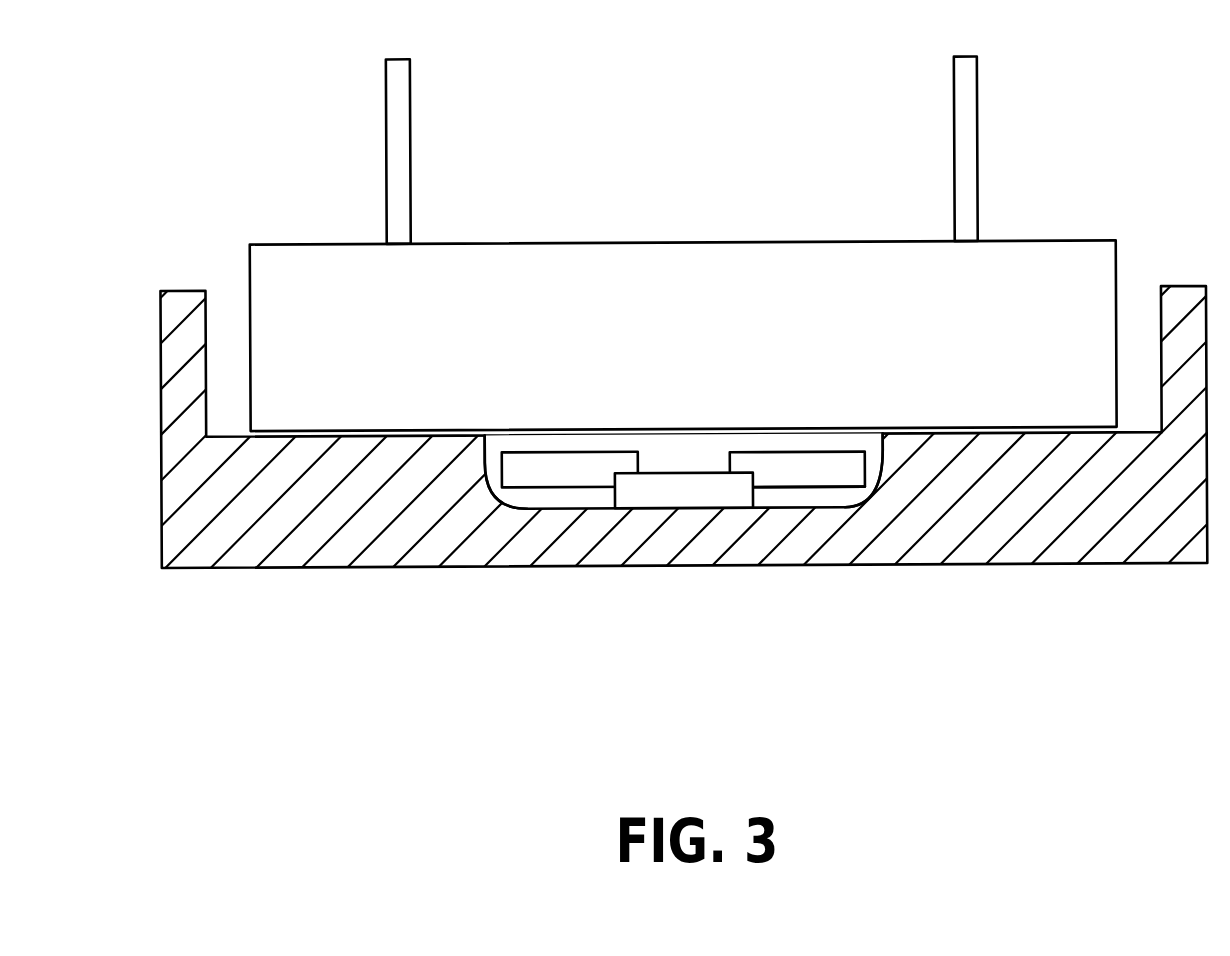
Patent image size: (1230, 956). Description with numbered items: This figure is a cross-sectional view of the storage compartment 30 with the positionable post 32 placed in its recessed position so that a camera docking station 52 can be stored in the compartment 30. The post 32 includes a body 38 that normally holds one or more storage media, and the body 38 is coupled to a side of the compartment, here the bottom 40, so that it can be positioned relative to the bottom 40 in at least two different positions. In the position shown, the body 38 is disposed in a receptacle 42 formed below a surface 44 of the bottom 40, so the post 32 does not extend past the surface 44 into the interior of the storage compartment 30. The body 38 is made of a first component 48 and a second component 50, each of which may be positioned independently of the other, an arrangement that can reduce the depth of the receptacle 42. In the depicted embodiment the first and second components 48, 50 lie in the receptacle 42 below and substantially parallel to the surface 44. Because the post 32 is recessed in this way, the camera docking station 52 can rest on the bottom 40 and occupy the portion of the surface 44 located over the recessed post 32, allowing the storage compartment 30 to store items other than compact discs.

The storage compartment 30 is at (615, 486).
The positionable post 32 is at (700, 605).
The body 38 is at (523, 487).
The side (bottom) 40 is at (351, 513).
The receptacle 42 is at (883, 433).
The surface 44 is at (393, 437).
The first component 48 is at (790, 487).
The second component 50 is at (661, 568).
The camera docking station 52 is at (297, 232).